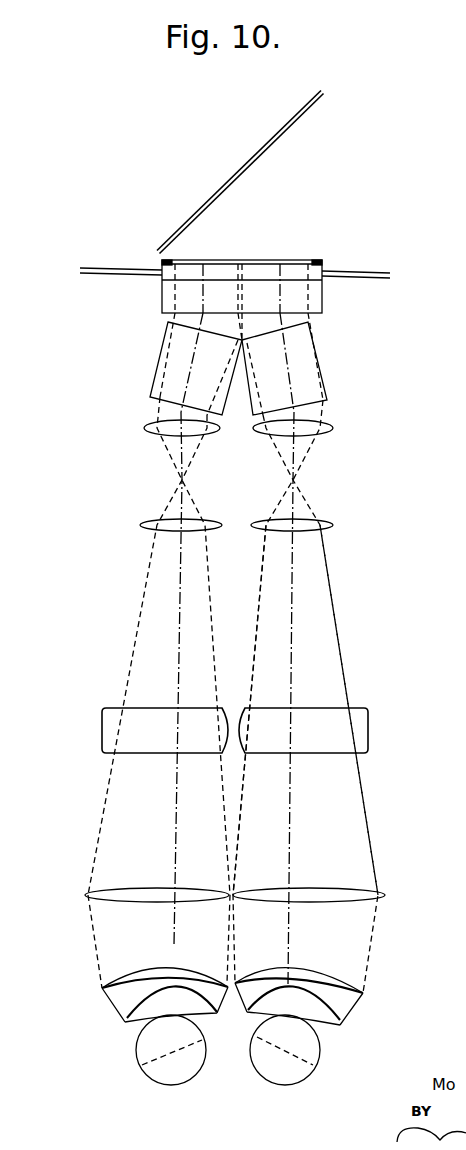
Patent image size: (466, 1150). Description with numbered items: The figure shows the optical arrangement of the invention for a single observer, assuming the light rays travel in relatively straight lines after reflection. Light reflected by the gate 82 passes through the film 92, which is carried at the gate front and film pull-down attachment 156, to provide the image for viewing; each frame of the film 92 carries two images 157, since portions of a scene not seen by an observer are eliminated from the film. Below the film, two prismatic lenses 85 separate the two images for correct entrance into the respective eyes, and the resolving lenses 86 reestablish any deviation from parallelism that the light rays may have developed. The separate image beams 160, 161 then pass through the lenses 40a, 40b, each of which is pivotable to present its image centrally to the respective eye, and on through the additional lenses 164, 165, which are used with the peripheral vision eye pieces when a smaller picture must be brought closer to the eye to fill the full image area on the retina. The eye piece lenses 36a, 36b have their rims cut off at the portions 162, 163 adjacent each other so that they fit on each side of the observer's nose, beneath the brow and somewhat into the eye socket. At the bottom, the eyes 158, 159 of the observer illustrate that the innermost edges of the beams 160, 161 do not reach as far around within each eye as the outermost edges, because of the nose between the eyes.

The gate 82 is at (277, 136).
The gate front and film pull-down attachment 156 is at (315, 298).
The film 92 is at (317, 260).
The images 157 is at (238, 262).
The prismatic lenses 85 is at (152, 370).
The resolving lenses 86 is at (333, 472).
The image beam 160 is at (126, 857).
The image beam 161 is at (331, 863).
The additional lens 164 is at (119, 963).
The lens 40a is at (105, 707).
The lens 40b is at (360, 707).
The additional lens 165 is at (107, 902).
The eye piece lens 36a is at (140, 1006).
The eye piece lens 36b is at (322, 1012).
The cut off portion 162 is at (214, 1014).
The cut off portion 163 is at (247, 1015).
The eye 158 is at (177, 1083).
The eye 159 is at (287, 1083).